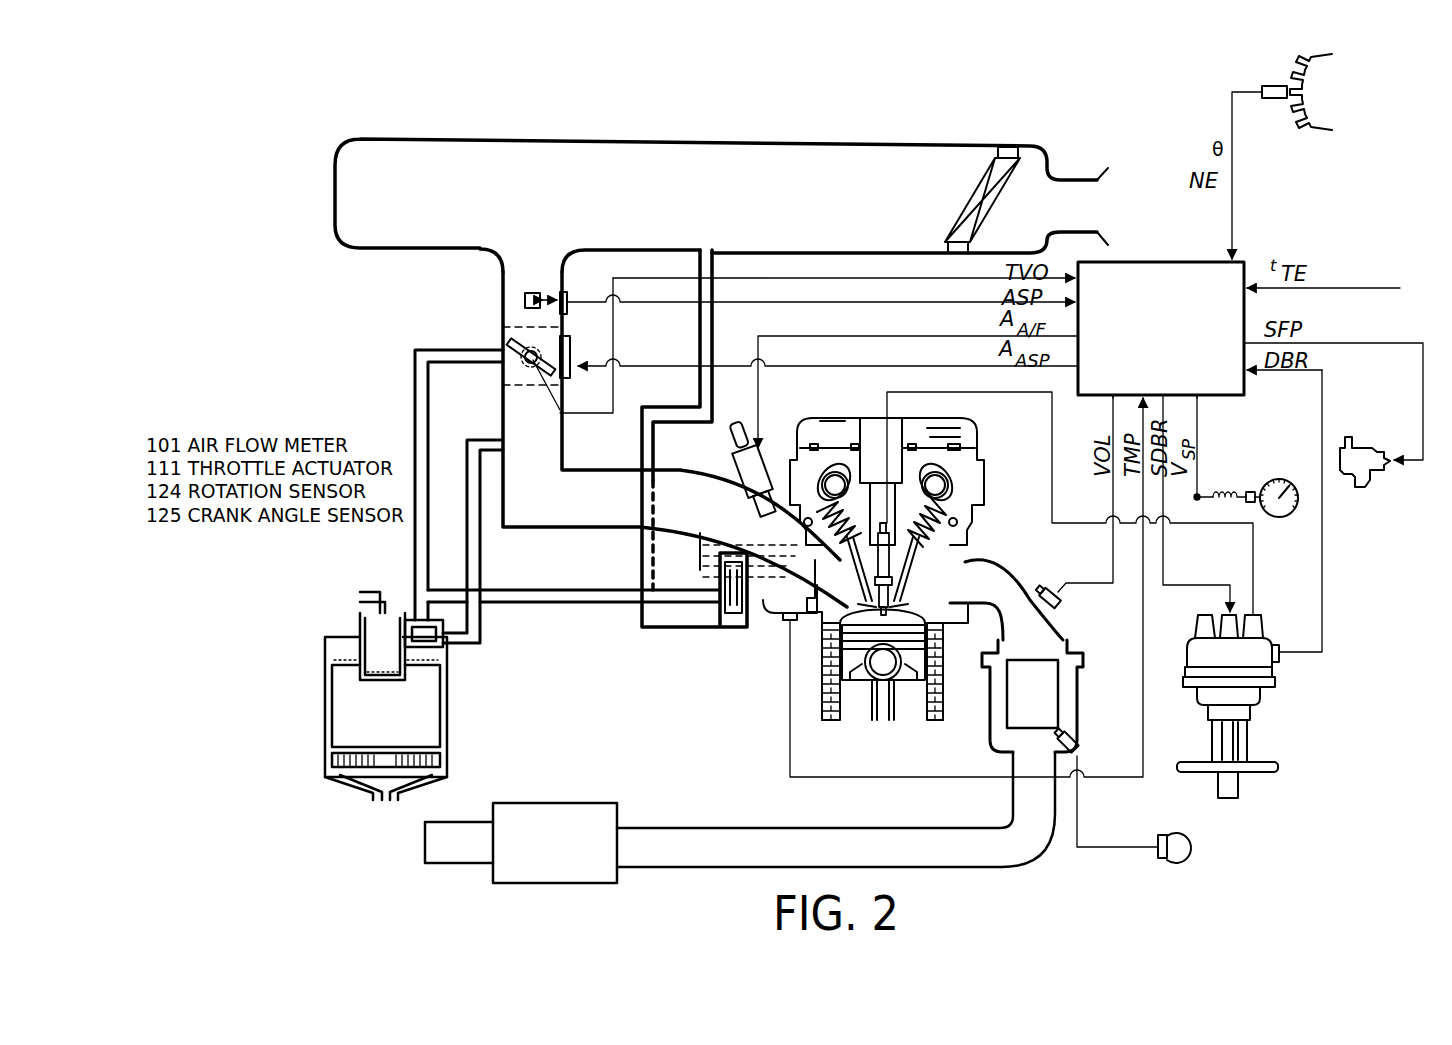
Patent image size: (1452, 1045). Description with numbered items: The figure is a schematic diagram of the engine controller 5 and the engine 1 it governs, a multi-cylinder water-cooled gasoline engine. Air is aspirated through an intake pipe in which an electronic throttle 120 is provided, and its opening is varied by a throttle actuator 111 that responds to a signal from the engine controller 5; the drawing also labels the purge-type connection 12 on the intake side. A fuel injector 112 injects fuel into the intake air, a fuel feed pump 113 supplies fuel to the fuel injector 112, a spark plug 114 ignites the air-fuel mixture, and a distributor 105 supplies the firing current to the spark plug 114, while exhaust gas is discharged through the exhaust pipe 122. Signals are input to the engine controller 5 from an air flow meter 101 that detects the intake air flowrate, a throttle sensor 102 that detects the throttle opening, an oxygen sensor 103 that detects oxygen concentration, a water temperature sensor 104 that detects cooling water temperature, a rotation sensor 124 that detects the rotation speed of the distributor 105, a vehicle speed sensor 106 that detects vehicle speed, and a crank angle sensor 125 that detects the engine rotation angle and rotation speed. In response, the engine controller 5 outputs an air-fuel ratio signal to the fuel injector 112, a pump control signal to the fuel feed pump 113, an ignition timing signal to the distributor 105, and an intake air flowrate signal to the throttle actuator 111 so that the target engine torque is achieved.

The engine 1 is at (993, 460).
The engine controller 5 is at (1190, 262).
The purge pipe 12 is at (578, 535).
The air flow meter 101 is at (538, 275).
The throttle sensor 102 is at (520, 390).
The oxygen sensor 103 is at (1052, 584).
The water temperature sensor 104 is at (775, 620).
The distributor 105 is at (1265, 623).
The vehicle speed sensor 106 is at (1266, 480).
The throttle actuator 111 is at (580, 337).
The fuel injector 112 is at (740, 457).
The fuel feed pump 113 is at (1356, 498).
The spark plug 114 is at (892, 565).
The electronic throttle 120 is at (492, 327).
The exhaust pipe 122 is at (1009, 872).
The rotation sensor 124 is at (1279, 660).
The crank angle sensor 125 is at (1270, 100).